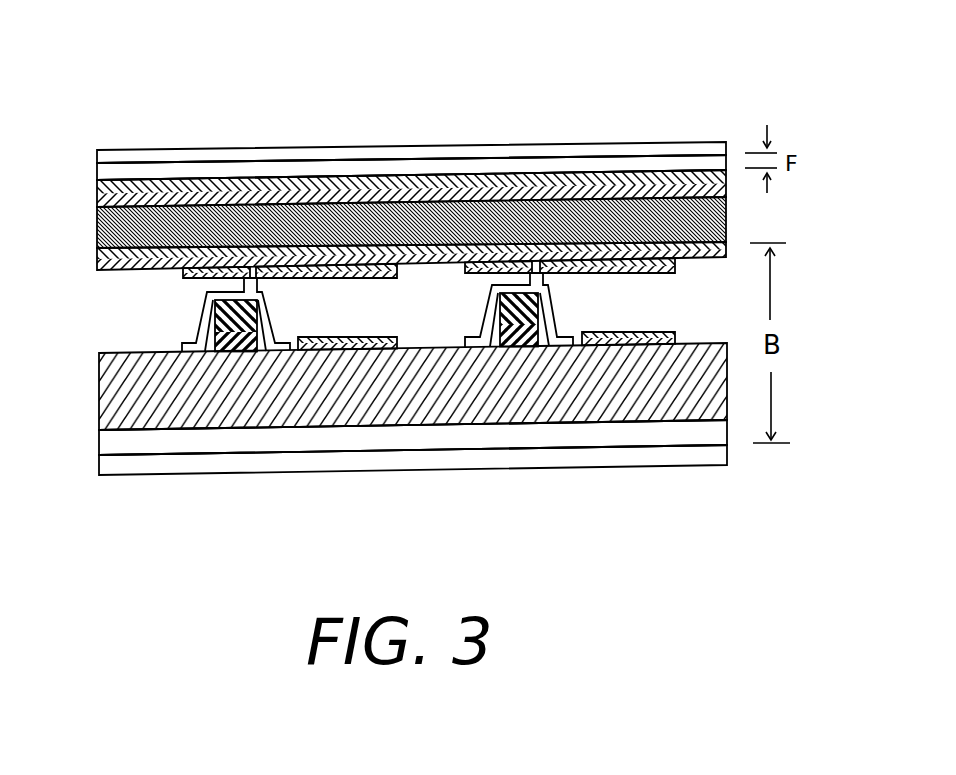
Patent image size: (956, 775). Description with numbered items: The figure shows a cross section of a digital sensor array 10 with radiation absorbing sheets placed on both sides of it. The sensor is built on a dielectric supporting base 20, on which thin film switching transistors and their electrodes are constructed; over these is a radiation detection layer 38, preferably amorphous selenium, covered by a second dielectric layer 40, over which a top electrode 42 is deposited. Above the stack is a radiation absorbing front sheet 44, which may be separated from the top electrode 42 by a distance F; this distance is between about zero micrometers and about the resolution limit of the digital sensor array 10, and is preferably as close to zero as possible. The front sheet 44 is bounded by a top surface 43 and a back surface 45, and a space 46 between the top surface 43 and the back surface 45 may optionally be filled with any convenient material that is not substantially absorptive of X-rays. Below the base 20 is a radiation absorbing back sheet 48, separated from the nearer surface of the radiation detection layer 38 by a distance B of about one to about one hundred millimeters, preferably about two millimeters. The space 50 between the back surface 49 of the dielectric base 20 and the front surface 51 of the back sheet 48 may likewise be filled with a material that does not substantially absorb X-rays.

The digital sensor array 10 is at (732, 100).
The dielectric supporting base 20 is at (112, 391).
The radiation detection layer 38 is at (100, 233).
The second dielectric layer 40 is at (98, 204).
The top electrode 42 is at (107, 182).
The top surface 43 is at (148, 178).
The radiation absorbing front sheet 44 is at (110, 157).
The back surface 45 is at (222, 162).
The space 46 is at (107, 175).
The radiation absorbing back sheet 48 is at (140, 465).
The back surface 49 is at (238, 430).
The space 50 is at (118, 442).
The front surface 51 is at (293, 453).